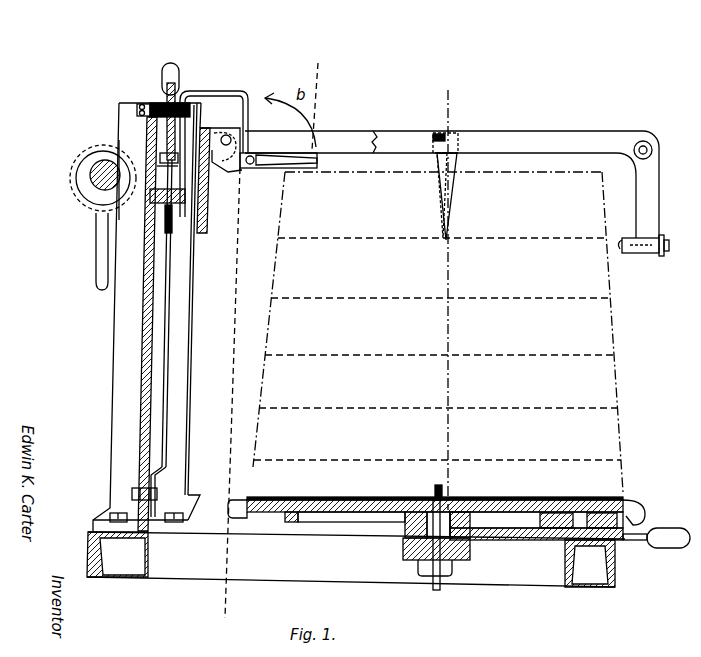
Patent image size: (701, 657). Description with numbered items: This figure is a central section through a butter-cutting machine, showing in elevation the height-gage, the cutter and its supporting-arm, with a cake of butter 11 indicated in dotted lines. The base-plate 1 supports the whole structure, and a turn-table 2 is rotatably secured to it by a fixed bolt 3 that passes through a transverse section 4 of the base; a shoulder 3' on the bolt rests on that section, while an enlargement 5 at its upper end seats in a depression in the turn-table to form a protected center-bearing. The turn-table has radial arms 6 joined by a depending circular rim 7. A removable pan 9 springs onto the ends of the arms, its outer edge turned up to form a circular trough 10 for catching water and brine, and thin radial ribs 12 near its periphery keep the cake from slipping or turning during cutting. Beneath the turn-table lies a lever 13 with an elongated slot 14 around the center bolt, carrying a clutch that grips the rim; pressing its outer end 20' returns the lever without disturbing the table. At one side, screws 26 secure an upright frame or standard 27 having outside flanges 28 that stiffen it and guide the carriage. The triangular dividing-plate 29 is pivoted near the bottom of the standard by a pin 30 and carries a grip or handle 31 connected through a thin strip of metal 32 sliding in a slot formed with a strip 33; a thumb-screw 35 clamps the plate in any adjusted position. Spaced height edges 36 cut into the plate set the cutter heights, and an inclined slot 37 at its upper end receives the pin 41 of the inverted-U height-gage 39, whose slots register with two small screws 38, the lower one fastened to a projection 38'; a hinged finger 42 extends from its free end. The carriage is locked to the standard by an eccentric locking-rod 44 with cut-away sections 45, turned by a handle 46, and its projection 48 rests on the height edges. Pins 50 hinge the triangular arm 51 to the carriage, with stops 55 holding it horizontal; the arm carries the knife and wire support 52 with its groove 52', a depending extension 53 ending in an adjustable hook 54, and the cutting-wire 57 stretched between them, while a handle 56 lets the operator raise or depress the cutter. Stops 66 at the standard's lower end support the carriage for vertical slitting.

The base-plate 1 is at (300, 578).
The turn-table 2 is at (405, 520).
The fixed bolt 3 is at (428, 584).
The shoulder 3' is at (471, 553).
The transverse section 4 is at (470, 556).
The enlargement 5 is at (455, 500).
The radial arms 6 is at (265, 514).
The circular rim 7 is at (292, 523).
The removable pan 9 is at (362, 499).
The circular trough 10 is at (646, 511).
The cake of butter 11 is at (494, 358).
The radial upright ribs 12 is at (278, 497).
The lever 13 is at (515, 541).
The elongated slot 14 is at (435, 186).
The outer end of the lever 20' is at (656, 553).
The screws 26 is at (148, 526).
The frame or standard 27 is at (140, 388).
The outside flanges 28 is at (114, 342).
The dividing-plate 29 is at (166, 362).
The pin 30 is at (132, 493).
The grip or handle 31 is at (181, 77).
The thin strip of metal 32 is at (168, 102).
The strip 33 is at (190, 106).
The thumb-screw 35 is at (145, 105).
The height edges 36 is at (147, 292).
The inclined slot 37 is at (167, 157).
The screws 38 is at (237, 139).
The projection 38' is at (118, 222).
The height-gage 39 is at (248, 93).
The pin 41 is at (160, 166).
The horizontal extension or finger 42 is at (290, 168).
The locking-rod 44 is at (100, 180).
The cut-away section 45 is at (104, 190).
The handle 46 is at (99, 283).
The projection 48 is at (185, 228).
The pins 50 is at (226, 135).
The triangular-shaped arm 51 is at (405, 131).
The combined knife and wire supporting means 52 is at (461, 300).
The small groove 52' is at (417, 195).
The depending extension 53 is at (660, 204).
The adjustable hook 54 is at (633, 253).
The stops 55 is at (228, 172).
The handle 56 is at (652, 144).
The cutting-wire 57 is at (534, 245).
The stops 66 is at (196, 497).